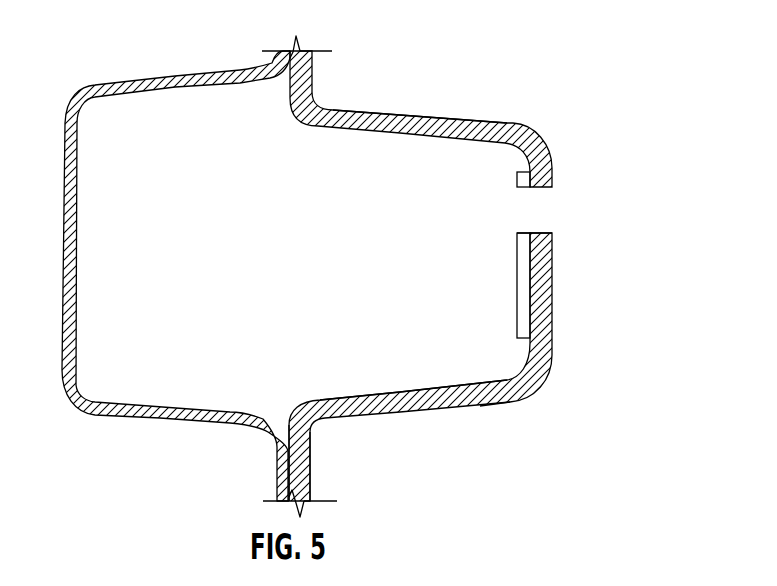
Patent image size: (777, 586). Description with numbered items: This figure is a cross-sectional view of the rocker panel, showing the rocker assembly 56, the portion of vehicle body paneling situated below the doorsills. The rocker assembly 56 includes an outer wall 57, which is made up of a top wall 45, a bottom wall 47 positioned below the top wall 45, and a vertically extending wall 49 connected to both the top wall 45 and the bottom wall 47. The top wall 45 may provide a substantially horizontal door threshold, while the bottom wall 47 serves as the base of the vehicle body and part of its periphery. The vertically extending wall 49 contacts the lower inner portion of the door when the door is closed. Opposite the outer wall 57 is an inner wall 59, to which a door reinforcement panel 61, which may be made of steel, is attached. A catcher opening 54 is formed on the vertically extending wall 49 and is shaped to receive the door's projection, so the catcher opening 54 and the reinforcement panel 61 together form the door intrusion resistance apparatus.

The top wall 45 is at (421, 105).
The bottom wall 47 is at (403, 413).
The vertically extending wall 49 is at (450, 375).
The catcher opening 54 is at (541, 212).
The rocker assembly 56 is at (487, 422).
The outer wall 57 is at (485, 120).
The inner wall 59 is at (507, 380).
The door reinforcement panel 61 is at (514, 288).